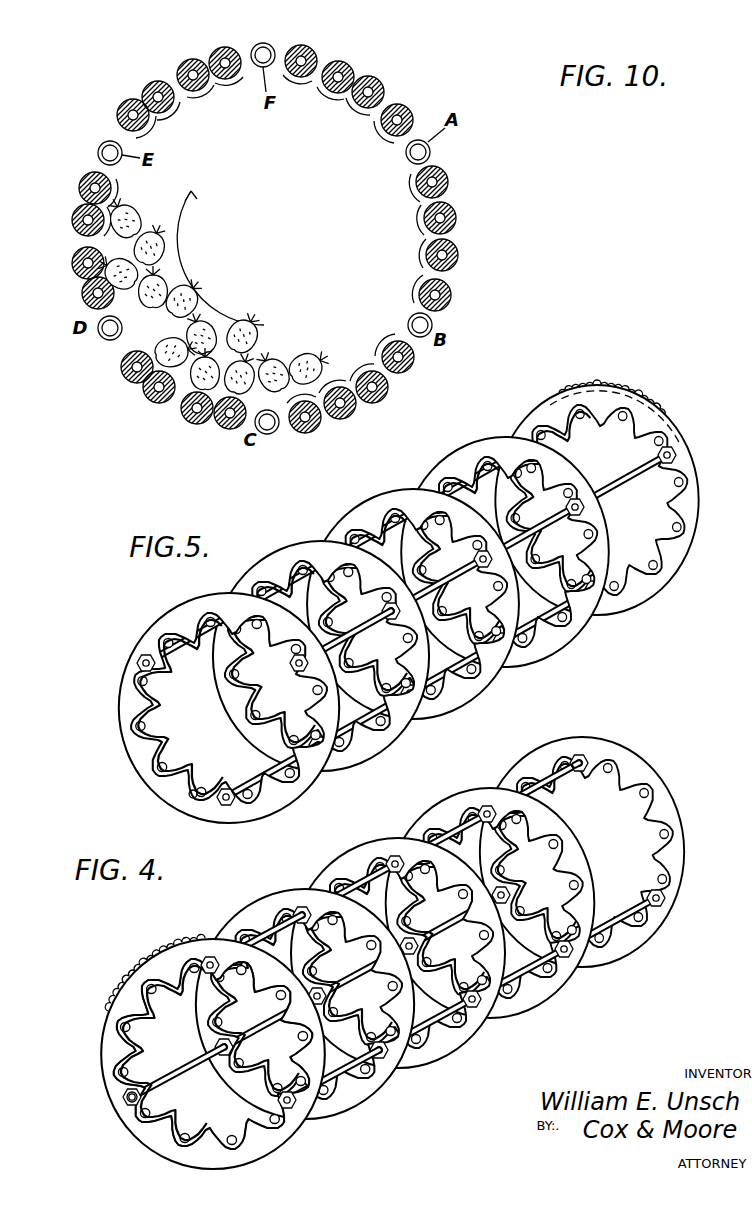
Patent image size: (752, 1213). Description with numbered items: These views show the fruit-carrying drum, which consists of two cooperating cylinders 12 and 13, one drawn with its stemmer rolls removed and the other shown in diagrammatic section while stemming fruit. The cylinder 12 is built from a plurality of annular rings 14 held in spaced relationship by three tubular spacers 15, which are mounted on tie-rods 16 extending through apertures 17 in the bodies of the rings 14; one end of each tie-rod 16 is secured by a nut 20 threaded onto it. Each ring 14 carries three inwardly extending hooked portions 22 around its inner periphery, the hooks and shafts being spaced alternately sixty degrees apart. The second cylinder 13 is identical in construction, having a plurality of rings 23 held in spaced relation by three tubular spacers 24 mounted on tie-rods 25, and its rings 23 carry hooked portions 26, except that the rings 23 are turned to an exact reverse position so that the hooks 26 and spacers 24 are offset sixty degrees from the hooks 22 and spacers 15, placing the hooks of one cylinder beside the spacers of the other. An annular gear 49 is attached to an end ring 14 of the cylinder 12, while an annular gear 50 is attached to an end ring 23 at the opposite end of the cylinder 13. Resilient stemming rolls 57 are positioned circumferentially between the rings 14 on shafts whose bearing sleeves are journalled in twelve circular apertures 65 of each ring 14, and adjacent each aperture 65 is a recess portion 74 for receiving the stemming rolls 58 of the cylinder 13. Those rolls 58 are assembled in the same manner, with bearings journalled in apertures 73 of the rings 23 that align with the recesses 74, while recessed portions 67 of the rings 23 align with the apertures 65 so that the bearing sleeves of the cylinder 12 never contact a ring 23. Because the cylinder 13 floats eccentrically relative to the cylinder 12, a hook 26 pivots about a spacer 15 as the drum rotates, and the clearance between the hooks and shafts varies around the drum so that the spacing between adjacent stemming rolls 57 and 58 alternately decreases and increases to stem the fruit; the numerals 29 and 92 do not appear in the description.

In FIG. 4, the cylinder 12 is at (377, 830).
In FIG. 5, the second cylinder 13 is at (294, 545).
In FIG. 4, the annular ring 14 is at (672, 818).
In FIG. 10, the tubular spacer 15 is at (263, 43).
In FIG. 4, the tubular spacer 15 is at (553, 808).
In FIG. 4, the tie-rod 16 is at (122, 1102).
In FIG. 4, the aperture 17 is at (581, 761).
In FIG. 4, the nut 20 is at (122, 1094).
In FIG. 4, the hooked portion 22 is at (225, 1150).
In FIG. 5, the annular ring 23 is at (577, 637).
In FIG. 10, the tubular spacer 24 is at (430, 152).
In FIG. 5, the tubular spacer 24 is at (629, 489).
In FIG. 5, the tie-rod 25 is at (137, 662).
In FIG. 5, the hooked portion 26 is at (161, 757).
In FIG. 4, the spacer 29 is at (385, 1080).
In FIG. 4, the annular gear 49 is at (127, 977).
In FIG. 5, the annular gear 50 is at (670, 425).
In FIG. 10, the stemming roll 57 is at (312, 52).
In FIG. 10, the stemming roll 58 is at (352, 70).
In FIG. 4, the circular aperture 65 is at (603, 935).
In FIG. 5, the recessed portion 67 is at (462, 531).
In FIG. 5, the aperture 73 is at (363, 682).
In FIG. 4, the recess portion 74 is at (425, 866).
In FIG. 5, the disc face 92 is at (552, 553).